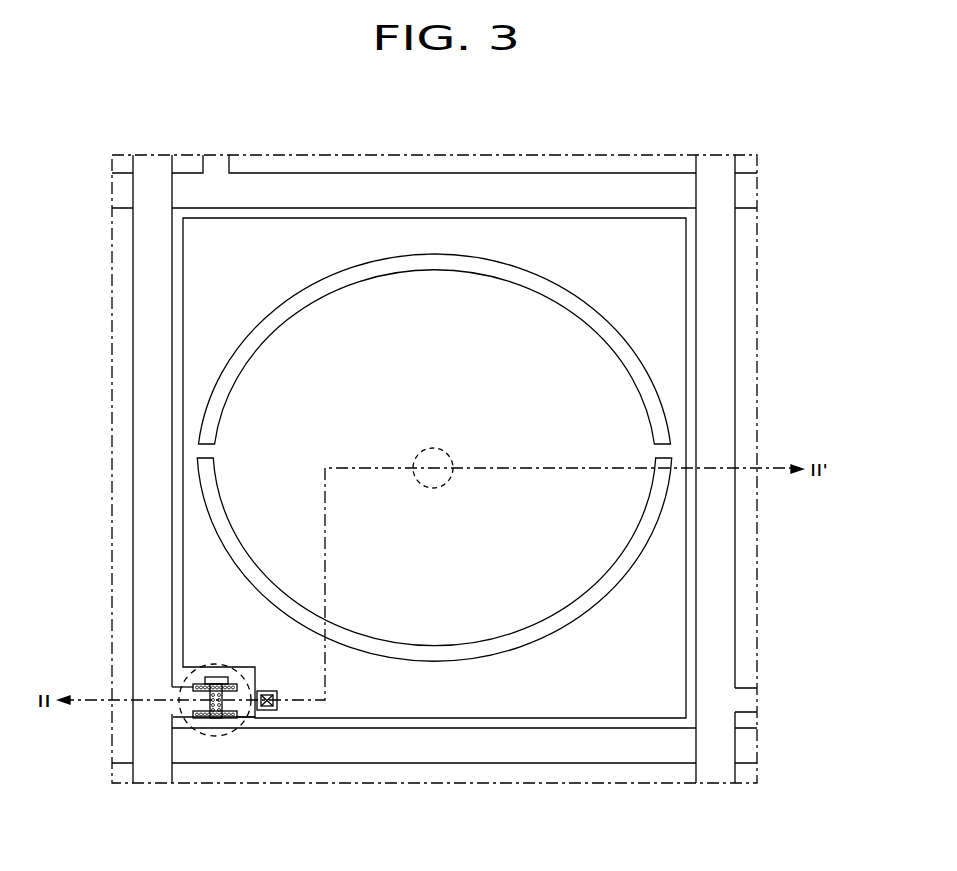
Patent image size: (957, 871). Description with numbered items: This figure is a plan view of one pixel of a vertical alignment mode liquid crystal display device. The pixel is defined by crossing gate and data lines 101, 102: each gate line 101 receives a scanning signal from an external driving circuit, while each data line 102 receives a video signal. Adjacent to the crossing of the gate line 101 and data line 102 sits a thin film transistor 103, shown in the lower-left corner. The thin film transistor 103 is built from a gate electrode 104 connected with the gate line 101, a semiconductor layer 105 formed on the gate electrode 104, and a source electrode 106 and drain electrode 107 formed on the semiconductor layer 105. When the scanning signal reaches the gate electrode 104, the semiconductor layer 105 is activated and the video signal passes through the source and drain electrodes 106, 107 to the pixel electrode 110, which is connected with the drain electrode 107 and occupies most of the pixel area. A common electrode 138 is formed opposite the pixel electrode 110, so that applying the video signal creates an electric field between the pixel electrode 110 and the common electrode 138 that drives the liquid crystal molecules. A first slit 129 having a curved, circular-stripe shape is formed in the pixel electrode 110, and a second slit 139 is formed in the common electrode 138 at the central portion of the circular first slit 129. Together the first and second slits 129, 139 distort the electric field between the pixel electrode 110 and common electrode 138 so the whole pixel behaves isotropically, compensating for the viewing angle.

The gate line 101 is at (585, 747).
The data line 102 is at (717, 665).
The thin film transistor 103 is at (221, 734).
The gate electrode 104 is at (213, 722).
The semiconductor layer 105 is at (233, 718).
The source electrode 106 is at (182, 707).
The drain electrode 107 is at (255, 710).
The pixel electrode 110 is at (684, 301).
The first slit 129 is at (647, 376).
The common electrode 138 is at (690, 260).
The second slit 139 is at (437, 473).